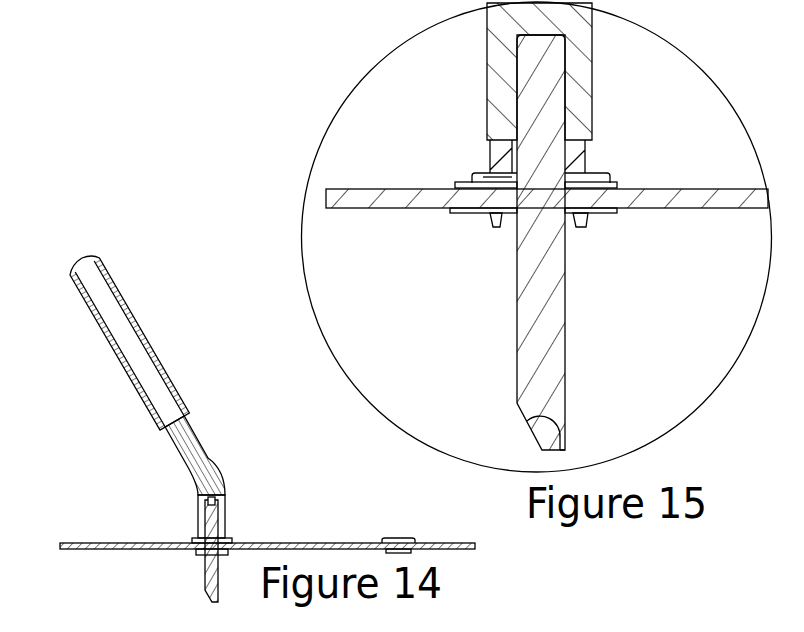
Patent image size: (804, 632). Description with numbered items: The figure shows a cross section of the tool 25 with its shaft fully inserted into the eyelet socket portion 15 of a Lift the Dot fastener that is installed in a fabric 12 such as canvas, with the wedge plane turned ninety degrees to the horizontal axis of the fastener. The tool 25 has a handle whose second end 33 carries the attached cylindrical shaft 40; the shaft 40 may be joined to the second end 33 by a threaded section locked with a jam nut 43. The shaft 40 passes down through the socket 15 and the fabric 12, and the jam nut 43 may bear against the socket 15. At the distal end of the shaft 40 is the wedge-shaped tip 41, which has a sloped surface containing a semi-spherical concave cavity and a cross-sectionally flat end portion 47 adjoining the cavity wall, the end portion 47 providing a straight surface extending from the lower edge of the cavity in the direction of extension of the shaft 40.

In FIG. 14, the fabric 12 is at (125, 542).
In FIG. 15, the fabric 12 is at (400, 188).
In FIG. 14, the eyelet socket portion 15 is at (200, 542).
In FIG. 15, the eyelet socket portion 15 is at (483, 173).
In FIG. 14, the tool 25 is at (155, 347).
In FIG. 15, the second end 33 is at (487, 43).
In FIG. 15, the cylindrical shaft 40 is at (515, 267).
In FIG. 15, the wedge-shaped tip 41 is at (530, 437).
In FIG. 15, the jam nut 43 is at (580, 152).
In FIG. 15, the end portion 47 is at (567, 433).